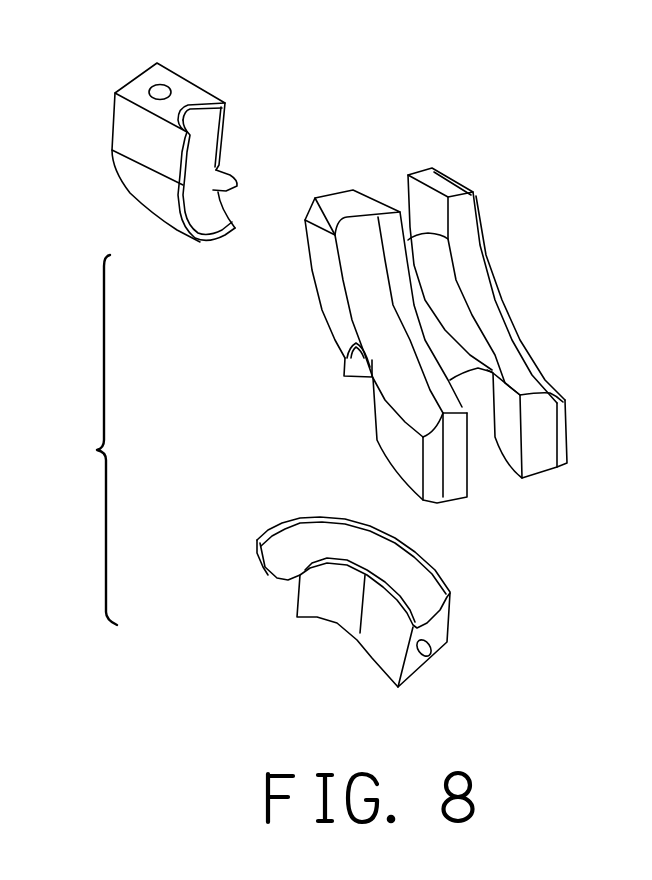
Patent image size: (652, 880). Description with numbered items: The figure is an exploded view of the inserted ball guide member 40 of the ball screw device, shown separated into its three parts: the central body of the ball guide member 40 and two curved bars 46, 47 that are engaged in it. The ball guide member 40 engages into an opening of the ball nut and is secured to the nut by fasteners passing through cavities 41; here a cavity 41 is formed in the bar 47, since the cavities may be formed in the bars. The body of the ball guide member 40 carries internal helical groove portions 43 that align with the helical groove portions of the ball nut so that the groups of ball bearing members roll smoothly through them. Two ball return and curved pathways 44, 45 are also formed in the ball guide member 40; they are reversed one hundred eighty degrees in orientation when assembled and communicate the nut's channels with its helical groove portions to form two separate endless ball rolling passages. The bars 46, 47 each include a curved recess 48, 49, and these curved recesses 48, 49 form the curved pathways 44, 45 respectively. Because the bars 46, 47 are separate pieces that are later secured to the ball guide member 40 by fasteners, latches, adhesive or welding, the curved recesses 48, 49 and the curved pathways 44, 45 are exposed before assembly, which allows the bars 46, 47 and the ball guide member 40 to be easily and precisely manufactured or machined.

The ball guide member 40 is at (537, 223).
The cavity 41 is at (427, 656).
The internal helical groove portion 43 is at (528, 367).
The ball return and curved pathway 44 is at (398, 200).
The ball return and curved pathway 45 is at (480, 452).
The bar 46 is at (130, 123).
The bar 47 is at (378, 645).
The curved recess 48 is at (205, 218).
The curved recess 49 is at (290, 555).